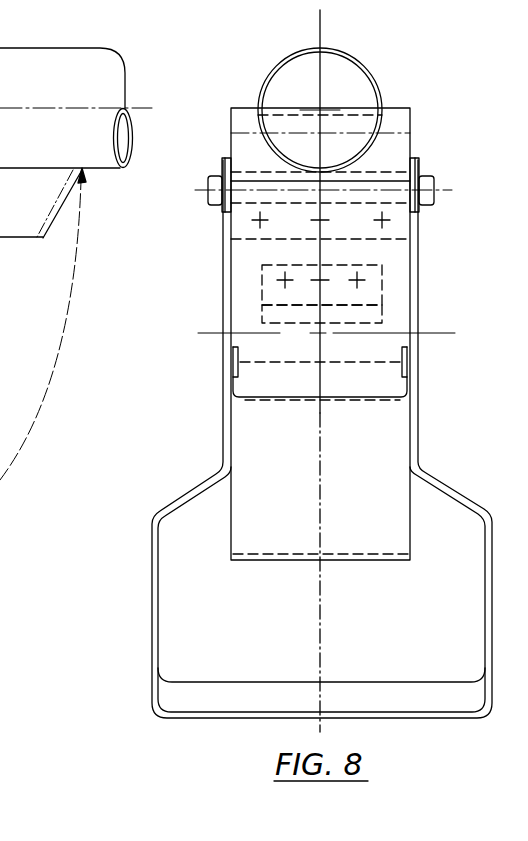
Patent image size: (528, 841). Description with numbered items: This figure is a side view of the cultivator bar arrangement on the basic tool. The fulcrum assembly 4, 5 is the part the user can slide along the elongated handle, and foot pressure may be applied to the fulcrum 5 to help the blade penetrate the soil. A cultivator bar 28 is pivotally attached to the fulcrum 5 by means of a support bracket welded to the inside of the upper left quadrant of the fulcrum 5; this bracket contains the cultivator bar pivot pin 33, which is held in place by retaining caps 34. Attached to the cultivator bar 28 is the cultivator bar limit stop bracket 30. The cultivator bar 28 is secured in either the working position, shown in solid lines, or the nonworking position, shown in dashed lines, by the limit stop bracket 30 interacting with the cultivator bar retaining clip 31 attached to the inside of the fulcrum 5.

The fulcrum assembly 4 is at (268, 75).
The fulcrum 5 is at (268, 560).
The cultivator bar 28 is at (153, 578).
The cultivator bar limit stop bracket 30 is at (278, 397).
The cultivator bar retaining clip 31 is at (260, 294).
The cultivator bar pivot pin 33 is at (373, 193).
The retaining caps 34 is at (208, 205).